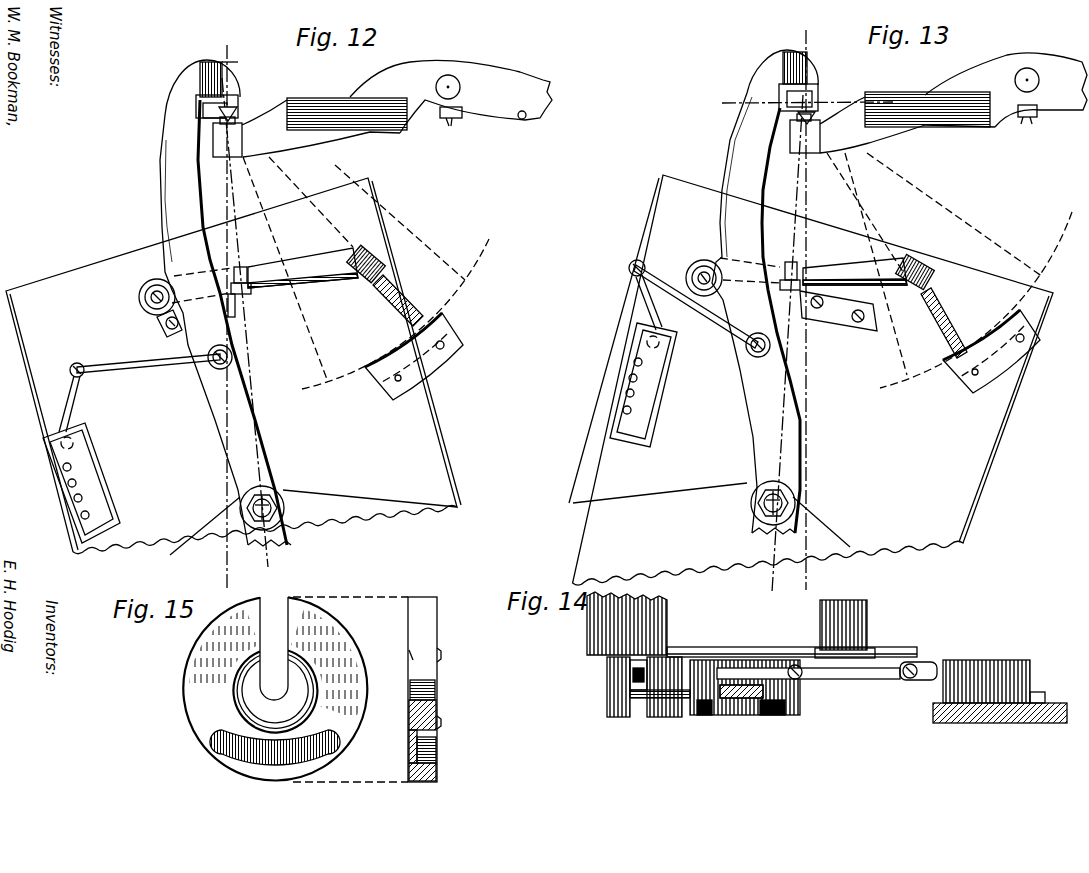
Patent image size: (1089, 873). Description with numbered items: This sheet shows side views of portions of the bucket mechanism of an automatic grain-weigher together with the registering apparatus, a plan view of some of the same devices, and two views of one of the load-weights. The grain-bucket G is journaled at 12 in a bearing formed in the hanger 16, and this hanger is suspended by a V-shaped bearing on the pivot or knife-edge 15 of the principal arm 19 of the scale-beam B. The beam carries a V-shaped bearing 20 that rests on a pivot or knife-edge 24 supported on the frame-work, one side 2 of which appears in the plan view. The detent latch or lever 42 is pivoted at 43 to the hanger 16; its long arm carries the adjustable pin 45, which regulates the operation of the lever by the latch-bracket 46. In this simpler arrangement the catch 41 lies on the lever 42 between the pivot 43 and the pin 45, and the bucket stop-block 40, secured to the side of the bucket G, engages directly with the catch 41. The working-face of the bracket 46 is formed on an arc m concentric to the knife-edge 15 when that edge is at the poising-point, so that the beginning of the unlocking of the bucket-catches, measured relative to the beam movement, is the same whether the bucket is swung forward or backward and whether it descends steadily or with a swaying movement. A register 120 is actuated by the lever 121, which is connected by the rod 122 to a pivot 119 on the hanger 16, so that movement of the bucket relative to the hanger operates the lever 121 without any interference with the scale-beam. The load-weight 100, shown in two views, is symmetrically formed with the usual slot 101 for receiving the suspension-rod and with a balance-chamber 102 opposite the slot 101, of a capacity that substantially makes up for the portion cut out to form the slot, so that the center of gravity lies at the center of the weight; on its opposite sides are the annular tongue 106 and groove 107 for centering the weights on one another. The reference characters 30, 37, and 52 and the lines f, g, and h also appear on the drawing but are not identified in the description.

In FIG. 14, the side of the frame-work 2 is at (952, 723).
In FIG. 12, the bucket journal 12 is at (284, 508).
In FIG. 13, the bucket journal 12 is at (751, 505).
In FIG. 14, the bucket journal 12 is at (775, 715).
In FIG. 12, the pivot or knife-edge 15 is at (205, 113).
In FIG. 13, the pivot or knife-edge 15 is at (805, 107).
In FIG. 12, the hanger 16 is at (161, 170).
In FIG. 13, the hanger 16 is at (731, 165).
In FIG. 14, the hanger 16 is at (745, 712).
In FIG. 12, the principal arm of the scale-beam 19 is at (310, 127).
In FIG. 13, the principal arm of the scale-beam 19 is at (892, 122).
In FIG. 12, the V-shaped bearing 20 is at (457, 117).
In FIG. 13, the V-shaped bearing 20 is at (1032, 105).
In FIG. 12, the pivot or knife-edge 24 is at (452, 122).
In FIG. 13, the pivot or knife-edge 24 is at (1030, 121).
In FIG. 12, the head of arm 30 is at (214, 62).
In FIG. 13, the head of arm 30 is at (802, 52).
In FIG. 12, the pointer 37 is at (232, 105).
In FIG. 13, the pointer 37 is at (815, 97).
In FIG. 12, the bucket stop-block 40 is at (158, 326).
In FIG. 13, the bucket stop-block 40 is at (838, 320).
In FIG. 12, the catch 41 is at (250, 294).
In FIG. 13, the catch 41 is at (782, 285).
In FIG. 12, the detent latch or lever 42 is at (312, 280).
In FIG. 13, the detent latch or lever 42 is at (848, 268).
In FIG. 14, the detent latch or lever 42 is at (860, 680).
In FIG. 12, the pivot 43 is at (139, 293).
In FIG. 13, the pivot 43 is at (702, 262).
In FIG. 12, the adjustable pin 45 is at (407, 308).
In FIG. 13, the adjustable pin 45 is at (943, 318).
In FIG. 14, the adjustable pin 45 is at (928, 668).
In FIG. 12, the latch-bracket 46 is at (452, 360).
In FIG. 13, the latch-bracket 46 is at (1012, 350).
In FIG. 14, the latch-bracket 46 is at (1012, 662).
In FIG. 12, the hole in handle 52 is at (481, 97).
In FIG. 13, the hole in handle 52 is at (1042, 113).
In FIG. 15, the load-weight 100 is at (190, 672).
In FIG. 15, the slot 101 is at (277, 624).
In FIG. 15, the balance-chamber 102 is at (243, 737).
In FIG. 15, the annular tongue 106 is at (410, 655).
In FIG. 15, the annular groove 107 is at (440, 722).
In FIG. 12, the pivot 119 is at (214, 365).
In FIG. 13, the pivot 119 is at (747, 349).
In FIG. 12, the register 120 is at (90, 477).
In FIG. 13, the register 120 is at (665, 395).
In FIG. 14, the register 120 is at (638, 717).
In FIG. 12, the lever 121 is at (70, 401).
In FIG. 13, the lever 121 is at (650, 307).
In FIG. 14, the lever 121 is at (678, 650).
In FIG. 12, the rod 122 is at (148, 368).
In FIG. 13, the rod 122 is at (695, 305).
In FIG. 14, the rod 122 is at (668, 700).
In FIG. 12, the scale-beam B is at (493, 68).
In FIG. 13, the scale-beam B is at (1060, 57).
In FIG. 12, the grain-bucket G is at (233, 366).
In FIG. 13, the grain-bucket G is at (990, 428).
In FIG. 14, the grain-bucket G is at (666, 594).
In FIG. 13, the horizontal axis line f is at (722, 103).
In FIG. 12, the vertical axis line g is at (226, 584).
In FIG. 13, the vertical axis line g is at (807, 580).
In FIG. 12, the inclined axis line h is at (267, 583).
In FIG. 13, the inclined axis line h is at (772, 583).
In FIG. 12, the arc m is at (302, 389).
In FIG. 13, the arc m is at (1072, 212).